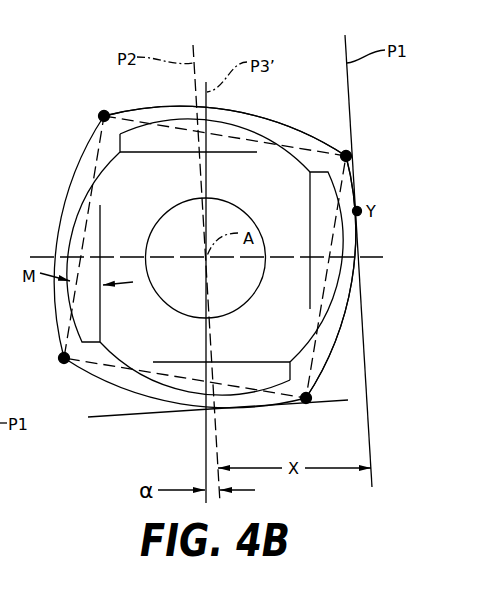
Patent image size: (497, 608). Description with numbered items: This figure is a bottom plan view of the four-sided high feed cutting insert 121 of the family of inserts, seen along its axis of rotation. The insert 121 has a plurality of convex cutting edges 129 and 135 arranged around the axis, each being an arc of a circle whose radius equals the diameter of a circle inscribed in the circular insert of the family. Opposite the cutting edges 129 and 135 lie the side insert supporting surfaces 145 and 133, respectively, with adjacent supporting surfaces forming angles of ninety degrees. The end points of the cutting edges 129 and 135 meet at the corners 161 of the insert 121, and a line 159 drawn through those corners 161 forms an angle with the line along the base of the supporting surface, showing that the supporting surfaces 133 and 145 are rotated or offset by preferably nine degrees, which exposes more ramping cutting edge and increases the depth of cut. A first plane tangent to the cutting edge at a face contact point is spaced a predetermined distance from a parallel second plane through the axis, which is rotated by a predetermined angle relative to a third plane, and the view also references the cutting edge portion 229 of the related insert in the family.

The high feed cutting insert 121 is at (302, 83).
The cutting edge 129 is at (348, 325).
The side insert supporting surface 133 is at (250, 377).
The cutting edge 135 is at (128, 108).
The side insert supporting surface 145 is at (88, 316).
The line through cutting edge end points 159 is at (228, 137).
The corners of the insert 161 is at (104, 116).
The cutting edge portion 229 is at (0, 493).